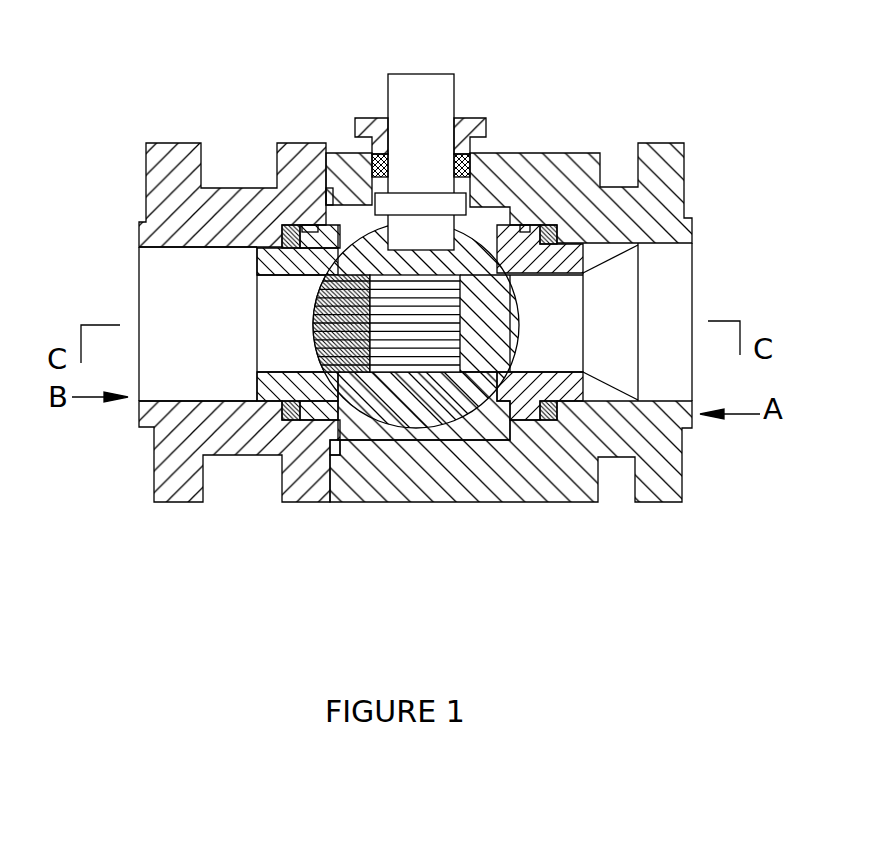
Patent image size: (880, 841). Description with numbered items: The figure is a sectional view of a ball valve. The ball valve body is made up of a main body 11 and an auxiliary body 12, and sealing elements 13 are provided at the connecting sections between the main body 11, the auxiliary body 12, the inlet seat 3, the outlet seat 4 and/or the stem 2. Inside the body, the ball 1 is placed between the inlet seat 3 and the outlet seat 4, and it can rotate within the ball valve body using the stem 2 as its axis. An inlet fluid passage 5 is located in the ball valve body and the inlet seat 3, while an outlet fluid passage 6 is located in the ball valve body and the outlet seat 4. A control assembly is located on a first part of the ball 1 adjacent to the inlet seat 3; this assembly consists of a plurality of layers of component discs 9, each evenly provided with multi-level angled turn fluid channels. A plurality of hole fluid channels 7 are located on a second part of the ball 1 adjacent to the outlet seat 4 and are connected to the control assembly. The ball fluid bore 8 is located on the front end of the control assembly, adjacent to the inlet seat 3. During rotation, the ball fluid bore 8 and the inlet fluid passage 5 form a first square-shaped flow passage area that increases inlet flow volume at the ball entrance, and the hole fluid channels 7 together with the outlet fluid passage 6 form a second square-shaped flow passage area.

The ball 1 is at (385, 398).
The stem 2 is at (430, 140).
The inlet seat 3 is at (567, 262).
The outlet seat 4 is at (318, 260).
The inlet fluid passage 5 is at (545, 322).
The outlet fluid passage 6 is at (270, 325).
The hole fluid channels 7 is at (337, 328).
The ball fluid bore 8 is at (487, 337).
The component discs 9 is at (407, 358).
The main body 11 is at (495, 187).
The auxiliary body 12 is at (183, 200).
The sealing elements 13 is at (550, 233).